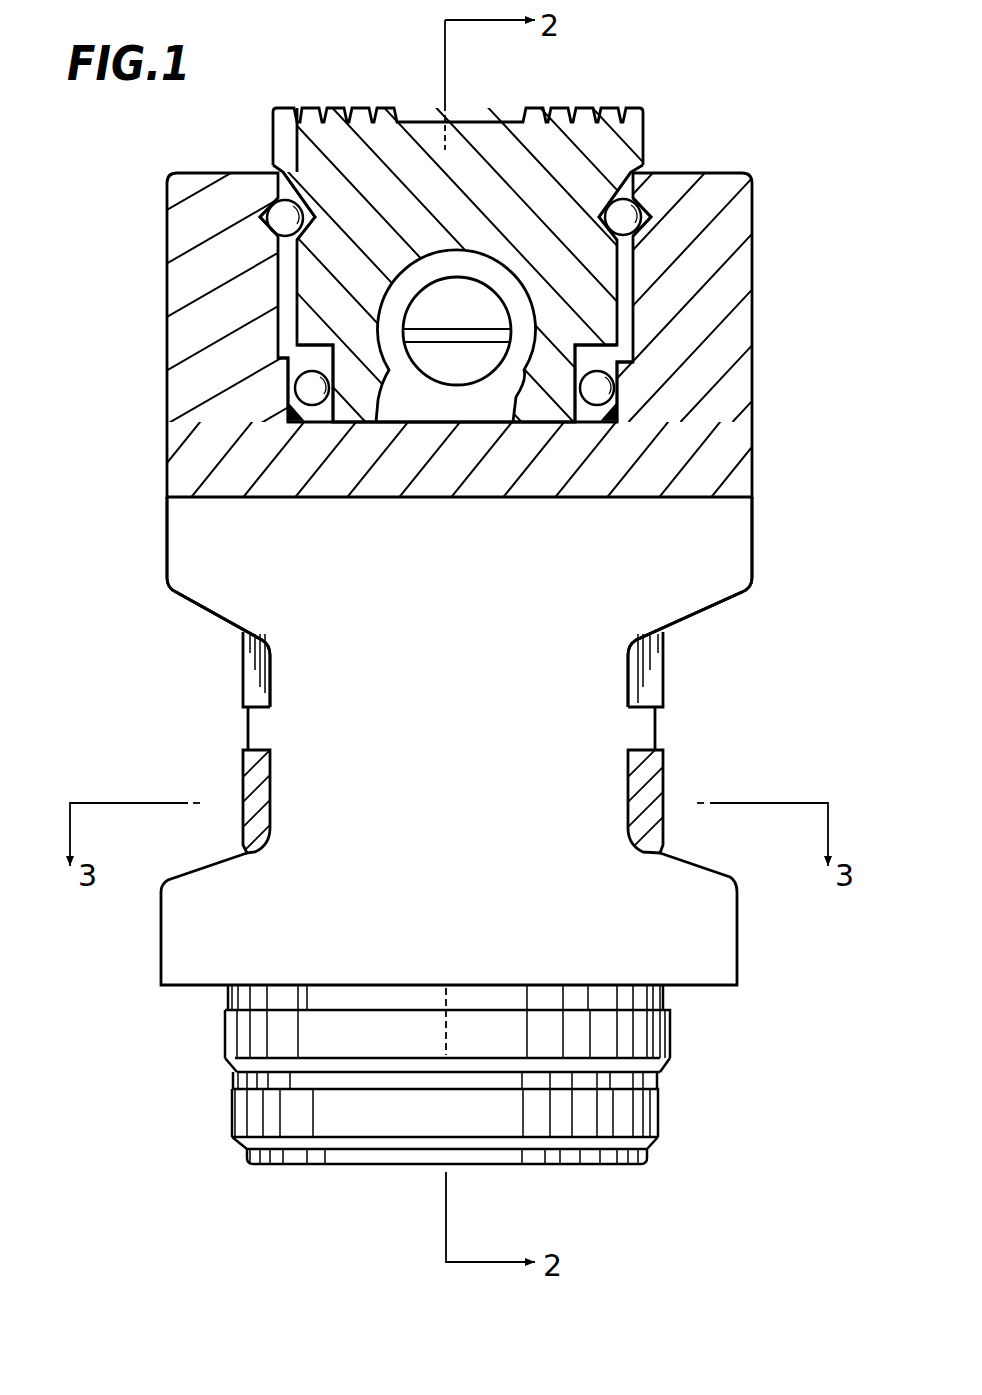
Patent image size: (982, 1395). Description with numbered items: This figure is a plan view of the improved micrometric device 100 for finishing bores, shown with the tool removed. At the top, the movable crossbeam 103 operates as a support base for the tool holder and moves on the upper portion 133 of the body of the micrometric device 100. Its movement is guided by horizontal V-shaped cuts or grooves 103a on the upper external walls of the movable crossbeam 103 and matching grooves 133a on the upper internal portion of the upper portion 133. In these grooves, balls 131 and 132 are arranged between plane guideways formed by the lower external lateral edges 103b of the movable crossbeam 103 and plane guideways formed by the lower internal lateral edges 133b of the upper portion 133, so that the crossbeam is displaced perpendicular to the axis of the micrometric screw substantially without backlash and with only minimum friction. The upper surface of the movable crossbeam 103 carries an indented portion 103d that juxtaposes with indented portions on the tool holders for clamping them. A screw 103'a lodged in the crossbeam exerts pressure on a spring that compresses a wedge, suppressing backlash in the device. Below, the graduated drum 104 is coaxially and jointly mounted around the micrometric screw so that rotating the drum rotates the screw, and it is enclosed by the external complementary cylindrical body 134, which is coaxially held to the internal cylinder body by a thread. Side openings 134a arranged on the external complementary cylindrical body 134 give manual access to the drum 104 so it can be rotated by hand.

The improved micrometric device 100 is at (118, 606).
The movable crossbeam 103 is at (453, 233).
The horizontal V-shape grooves 103a is at (303, 190).
The lower external lateral edges 103b is at (312, 353).
The indented portion 103d is at (365, 108).
The screw 103'a is at (611, 303).
The graduated drum 104 is at (648, 762).
The balls 131 is at (267, 210).
The balls 132 is at (297, 388).
The upper portion 133 is at (712, 300).
The horizontal V-shape grooves 133a is at (262, 237).
The lower internal lateral edges 133b is at (297, 407).
The external complementary cylindrical body 134 is at (233, 958).
The side openings 134a is at (720, 606).